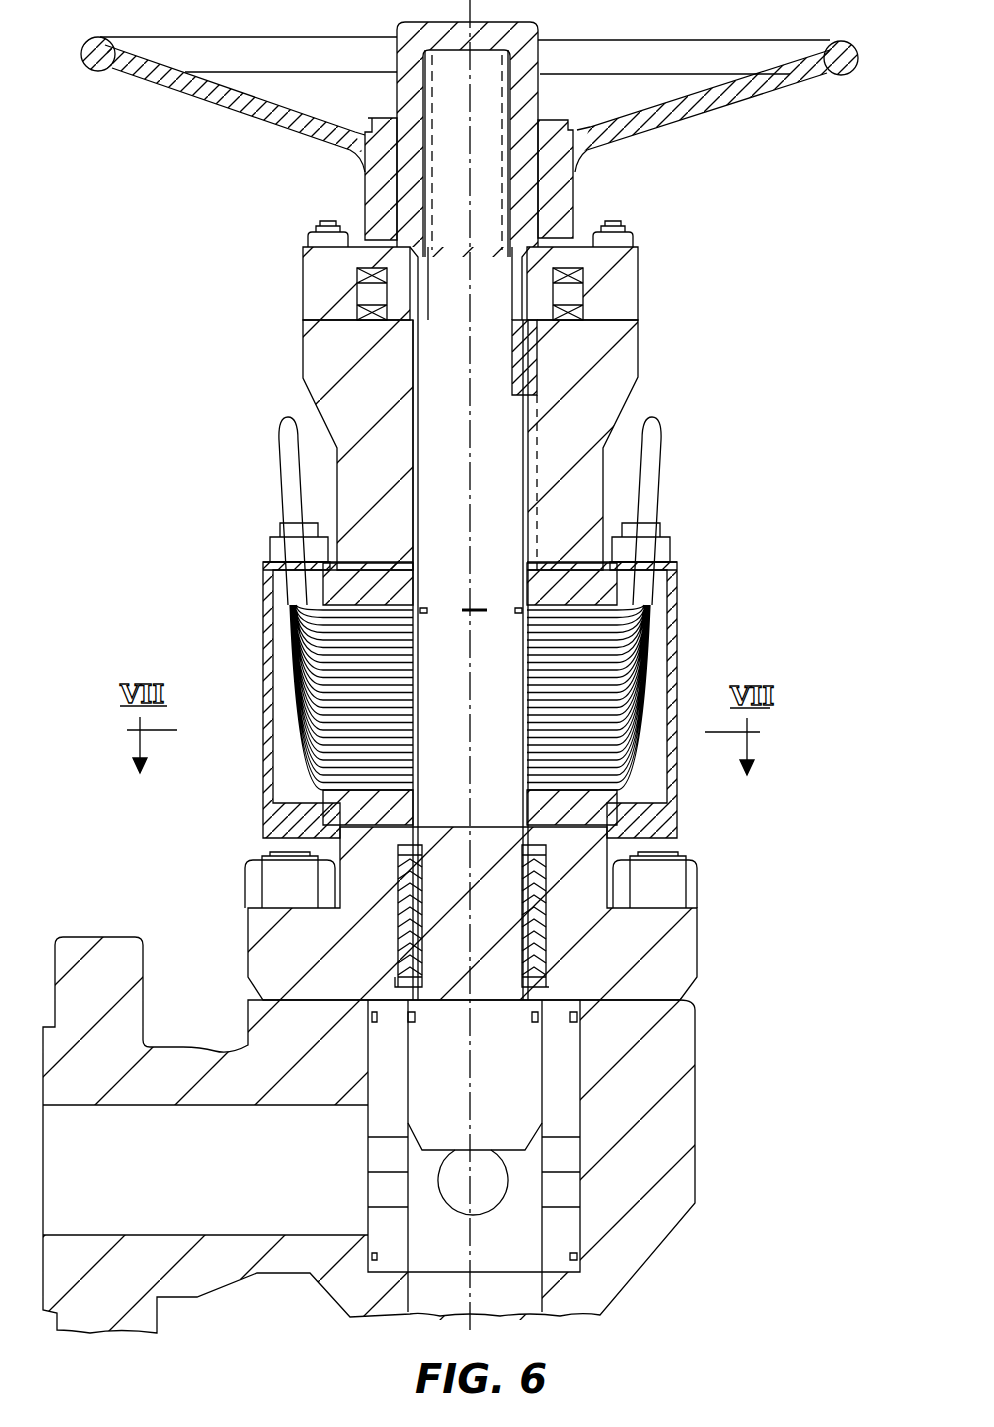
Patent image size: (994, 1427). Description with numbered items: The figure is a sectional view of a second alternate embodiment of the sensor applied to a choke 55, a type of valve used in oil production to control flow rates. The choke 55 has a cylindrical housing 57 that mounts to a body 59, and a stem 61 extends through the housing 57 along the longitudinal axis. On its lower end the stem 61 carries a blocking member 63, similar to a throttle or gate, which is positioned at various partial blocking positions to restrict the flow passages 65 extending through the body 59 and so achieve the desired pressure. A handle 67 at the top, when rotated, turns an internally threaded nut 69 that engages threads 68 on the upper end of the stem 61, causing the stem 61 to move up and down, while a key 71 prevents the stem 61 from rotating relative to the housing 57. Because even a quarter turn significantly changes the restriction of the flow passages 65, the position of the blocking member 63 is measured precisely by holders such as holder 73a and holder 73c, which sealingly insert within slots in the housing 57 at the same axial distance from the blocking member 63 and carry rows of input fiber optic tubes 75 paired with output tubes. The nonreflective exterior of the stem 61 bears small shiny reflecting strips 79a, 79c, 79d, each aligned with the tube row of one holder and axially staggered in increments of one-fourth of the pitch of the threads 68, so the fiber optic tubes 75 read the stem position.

The choke 55 is at (243, 453).
The housing 57 is at (620, 387).
The body 59 is at (688, 1050).
The stem 61 is at (428, 367).
The blocking member 63 is at (533, 1105).
The flow passages 65 is at (488, 1192).
The handle 67 is at (568, 182).
The threads 68 is at (513, 107).
The internally threaded nut 69 is at (535, 62).
The key 71 is at (530, 353).
The holder 73a is at (273, 813).
The holder 73c is at (675, 813).
The input fiber optic tubes 75 is at (530, 733).
The reflecting strip 79a is at (422, 613).
The reflecting strip 79c is at (517, 613).
The reflecting strip 79d is at (477, 607).